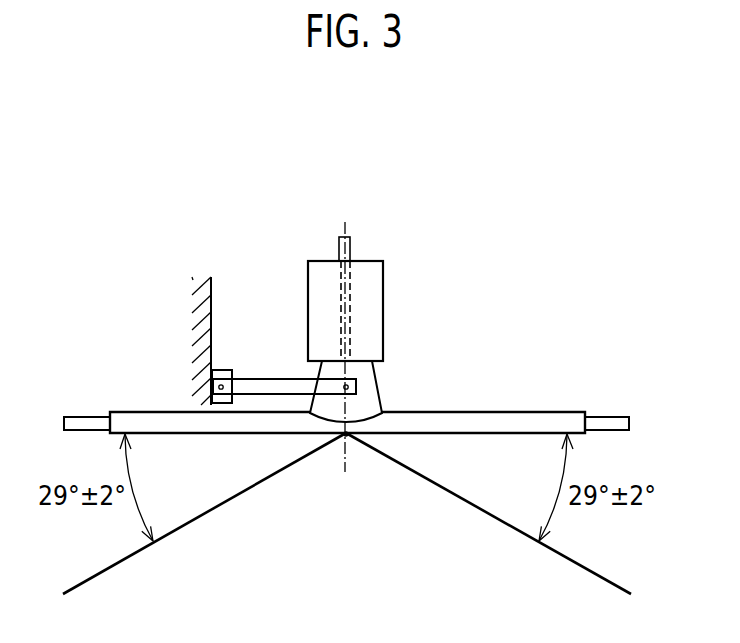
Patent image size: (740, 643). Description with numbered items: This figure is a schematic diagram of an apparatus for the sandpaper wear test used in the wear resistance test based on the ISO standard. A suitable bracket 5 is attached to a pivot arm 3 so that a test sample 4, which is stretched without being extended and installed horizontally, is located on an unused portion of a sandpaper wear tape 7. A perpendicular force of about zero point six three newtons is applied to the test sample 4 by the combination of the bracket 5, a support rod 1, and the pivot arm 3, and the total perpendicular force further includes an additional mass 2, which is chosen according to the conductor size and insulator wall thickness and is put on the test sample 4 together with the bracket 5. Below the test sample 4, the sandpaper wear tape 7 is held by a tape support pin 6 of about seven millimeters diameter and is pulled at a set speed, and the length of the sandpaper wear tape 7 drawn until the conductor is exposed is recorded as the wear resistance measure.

The support rod 1 is at (352, 245).
The additional mass 2 is at (377, 311).
The pivot arm 3 is at (262, 380).
The test sample 4 is at (163, 423).
The bracket 5 is at (353, 418).
The tape support pin 6 is at (343, 438).
The sandpaper wear tape 7 is at (453, 495).